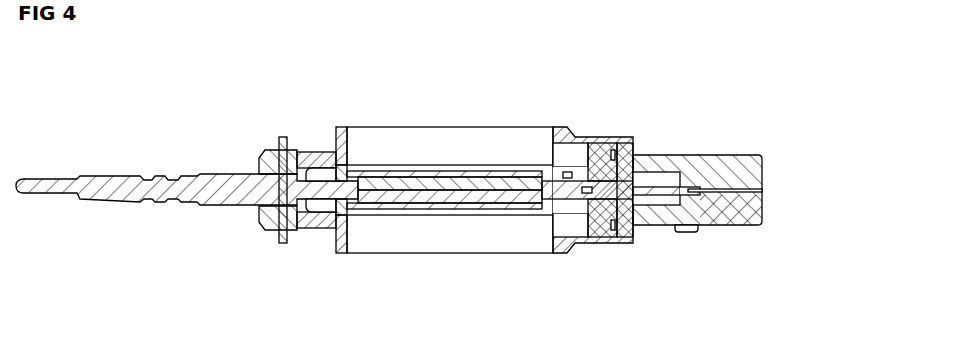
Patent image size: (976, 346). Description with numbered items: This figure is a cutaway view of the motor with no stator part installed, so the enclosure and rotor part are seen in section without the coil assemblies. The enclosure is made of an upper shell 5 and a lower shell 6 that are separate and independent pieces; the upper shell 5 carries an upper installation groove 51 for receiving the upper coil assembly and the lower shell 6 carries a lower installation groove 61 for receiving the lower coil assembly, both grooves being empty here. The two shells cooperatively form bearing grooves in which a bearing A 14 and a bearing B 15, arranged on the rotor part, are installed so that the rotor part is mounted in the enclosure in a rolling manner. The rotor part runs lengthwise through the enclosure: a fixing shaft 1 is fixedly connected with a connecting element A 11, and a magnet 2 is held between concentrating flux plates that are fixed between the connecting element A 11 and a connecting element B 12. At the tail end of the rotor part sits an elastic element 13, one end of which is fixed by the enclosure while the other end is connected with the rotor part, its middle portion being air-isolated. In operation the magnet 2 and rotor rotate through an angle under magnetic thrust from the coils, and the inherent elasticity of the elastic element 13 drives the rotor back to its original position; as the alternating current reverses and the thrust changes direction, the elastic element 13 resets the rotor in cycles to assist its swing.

The fixing shaft 1 is at (220, 188).
The connecting element A 11 is at (318, 172).
The bearing A 14 is at (290, 228).
The upper shell 5 is at (345, 135).
The lower shell 6 is at (342, 237).
The upper installation groove 51 is at (412, 143).
The lower installation groove 61 is at (405, 230).
The magnet 2 is at (493, 200).
The connecting element B 12 is at (580, 160).
The bearing B 15 is at (607, 137).
The elastic element 13 is at (641, 190).